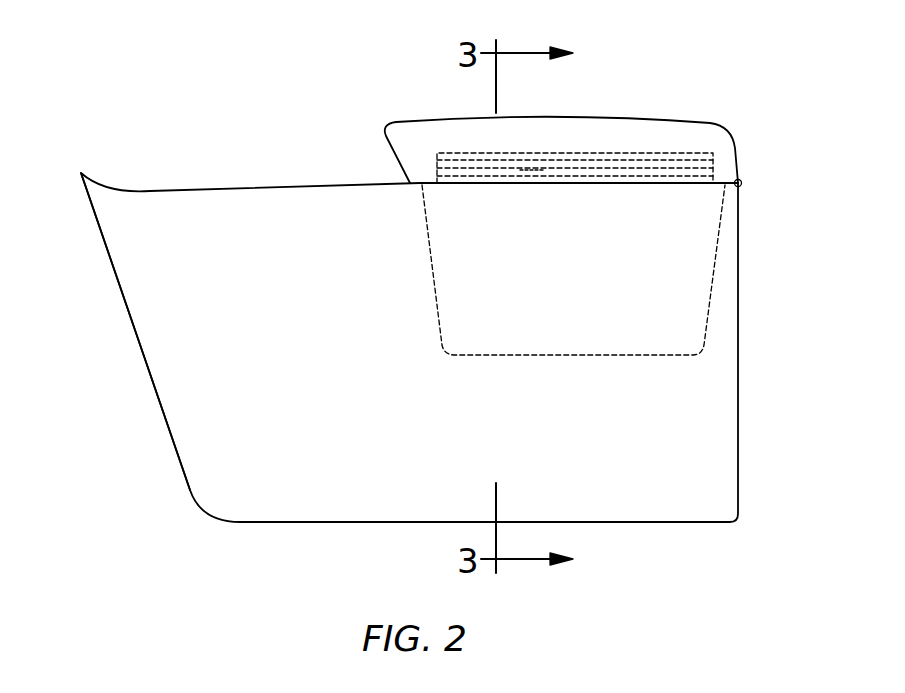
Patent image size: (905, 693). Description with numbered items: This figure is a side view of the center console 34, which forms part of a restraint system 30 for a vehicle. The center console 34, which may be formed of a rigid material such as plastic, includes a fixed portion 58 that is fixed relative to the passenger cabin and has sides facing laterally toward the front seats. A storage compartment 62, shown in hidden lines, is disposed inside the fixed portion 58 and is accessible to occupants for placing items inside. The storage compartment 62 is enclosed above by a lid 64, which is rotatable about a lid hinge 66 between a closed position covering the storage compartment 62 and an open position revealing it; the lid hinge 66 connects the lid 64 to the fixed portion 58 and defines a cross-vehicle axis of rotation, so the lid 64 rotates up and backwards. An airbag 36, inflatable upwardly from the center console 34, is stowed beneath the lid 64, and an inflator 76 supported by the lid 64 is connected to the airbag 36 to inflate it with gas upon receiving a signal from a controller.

The restraint system 30 is at (437, 288).
The center console 34 is at (322, 178).
The fixed portion 58 is at (120, 293).
The lid 64 is at (402, 121).
The lid hinge 66 is at (742, 183).
The airbag 36 is at (660, 153).
The inflator 76 is at (537, 171).
The storage compartment 62 is at (540, 357).